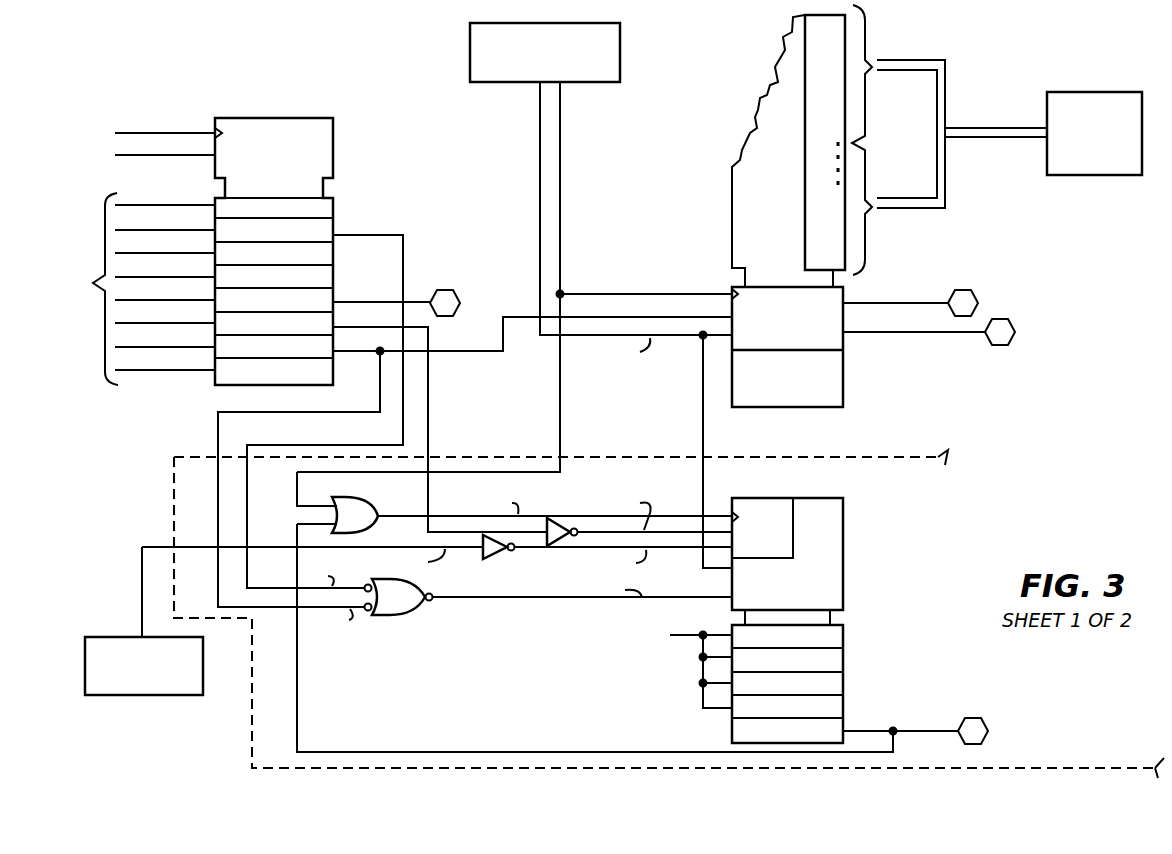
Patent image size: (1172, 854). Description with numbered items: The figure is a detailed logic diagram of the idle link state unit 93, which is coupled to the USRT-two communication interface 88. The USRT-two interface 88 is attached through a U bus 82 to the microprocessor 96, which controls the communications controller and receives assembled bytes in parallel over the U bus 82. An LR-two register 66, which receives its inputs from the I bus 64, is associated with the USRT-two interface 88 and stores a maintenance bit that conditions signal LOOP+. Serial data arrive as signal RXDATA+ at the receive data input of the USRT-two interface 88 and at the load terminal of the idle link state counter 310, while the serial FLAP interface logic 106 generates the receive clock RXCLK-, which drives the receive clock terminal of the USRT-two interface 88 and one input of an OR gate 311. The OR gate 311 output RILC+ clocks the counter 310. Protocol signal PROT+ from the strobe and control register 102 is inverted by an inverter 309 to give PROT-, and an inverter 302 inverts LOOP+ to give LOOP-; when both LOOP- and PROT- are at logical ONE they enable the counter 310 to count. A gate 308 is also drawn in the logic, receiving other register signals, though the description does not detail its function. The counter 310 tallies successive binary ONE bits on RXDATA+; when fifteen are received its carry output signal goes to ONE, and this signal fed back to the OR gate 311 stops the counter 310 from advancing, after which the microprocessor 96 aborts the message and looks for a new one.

The LR2-2 register 66 is at (333, 147).
The I bus 64 is at (136, 287).
The serial FLAP interface logic 106 is at (620, 38).
The USRT-2 88 is at (732, 210).
The U bus 82 is at (1000, 138).
The microprocessor 96 is at (1103, 92).
The idle link state unit 93 is at (917, 457).
The OR gate 311 is at (366, 498).
The inverter 302 is at (558, 518).
The inverter 309 is at (498, 560).
The NOR gate 308 is at (408, 615).
The idle link state counter 310 is at (843, 575).
The strobe and control register 102 is at (168, 695).